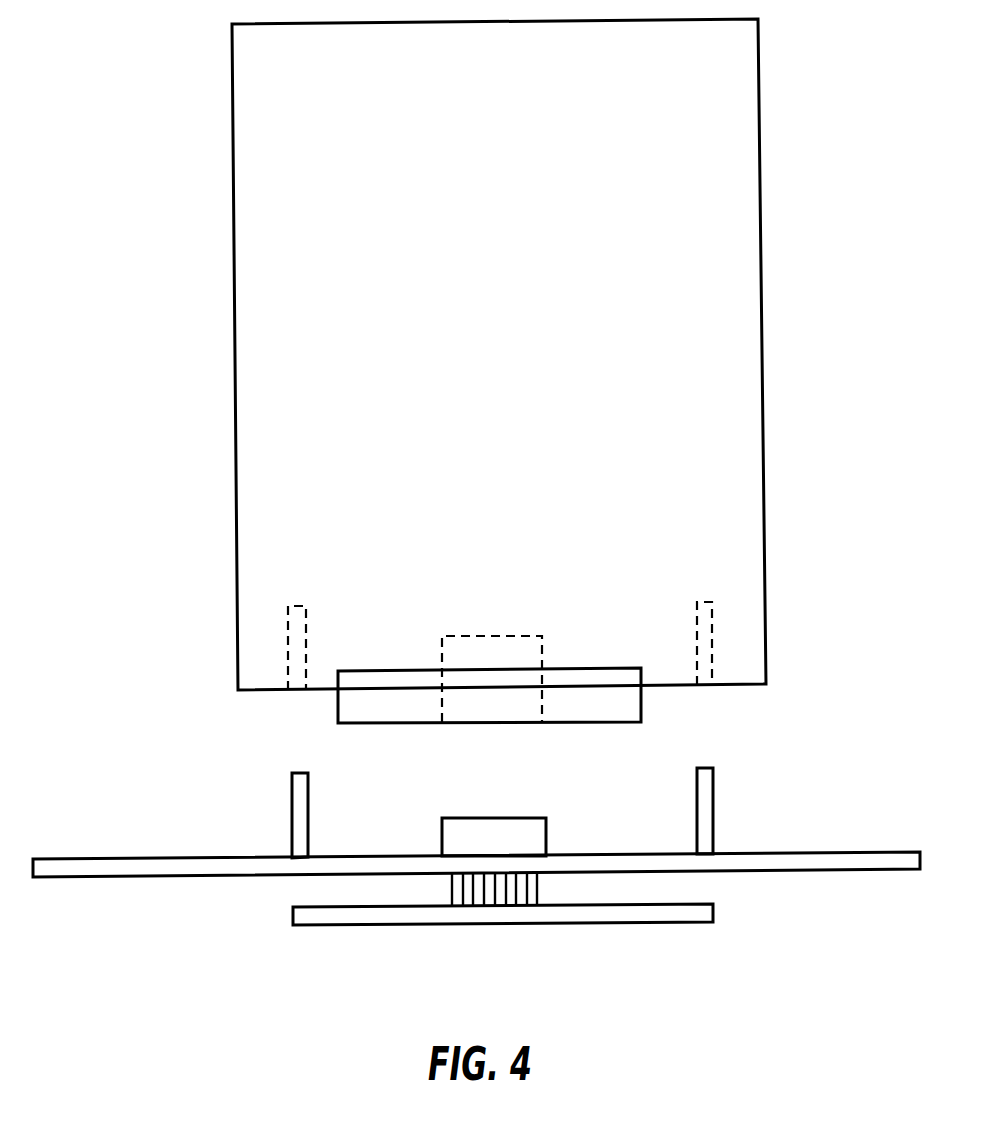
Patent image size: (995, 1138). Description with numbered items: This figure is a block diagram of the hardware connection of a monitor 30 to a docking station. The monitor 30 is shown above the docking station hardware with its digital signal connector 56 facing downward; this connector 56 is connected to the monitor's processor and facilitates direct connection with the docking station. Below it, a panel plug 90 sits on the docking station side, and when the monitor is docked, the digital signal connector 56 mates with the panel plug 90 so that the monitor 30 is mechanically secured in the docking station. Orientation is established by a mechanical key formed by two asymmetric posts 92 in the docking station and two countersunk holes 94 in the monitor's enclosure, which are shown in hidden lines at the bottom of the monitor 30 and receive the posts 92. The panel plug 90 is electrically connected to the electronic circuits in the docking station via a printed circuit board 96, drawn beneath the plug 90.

The monitor 30 is at (759, 155).
The digital signal connector 56 is at (490, 636).
The countersunk holes 94 is at (288, 652).
The asymmetric posts 92 is at (292, 815).
The panel plug 90 is at (493, 818).
The printed circuit board 96 is at (587, 924).